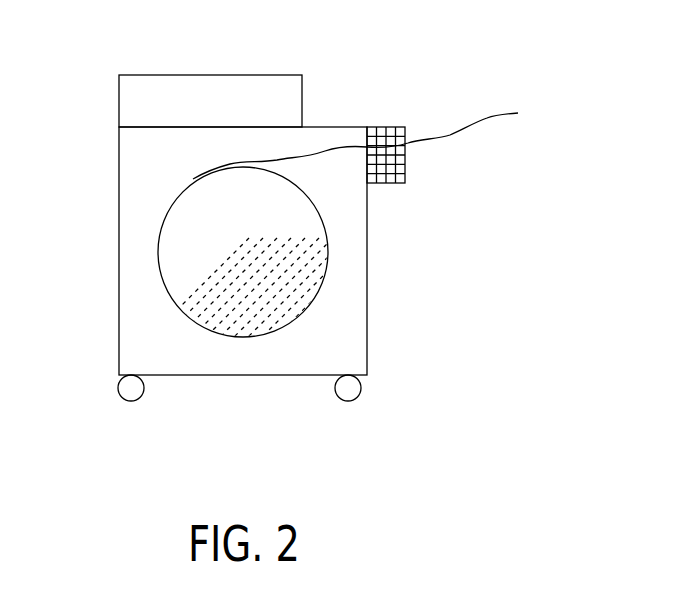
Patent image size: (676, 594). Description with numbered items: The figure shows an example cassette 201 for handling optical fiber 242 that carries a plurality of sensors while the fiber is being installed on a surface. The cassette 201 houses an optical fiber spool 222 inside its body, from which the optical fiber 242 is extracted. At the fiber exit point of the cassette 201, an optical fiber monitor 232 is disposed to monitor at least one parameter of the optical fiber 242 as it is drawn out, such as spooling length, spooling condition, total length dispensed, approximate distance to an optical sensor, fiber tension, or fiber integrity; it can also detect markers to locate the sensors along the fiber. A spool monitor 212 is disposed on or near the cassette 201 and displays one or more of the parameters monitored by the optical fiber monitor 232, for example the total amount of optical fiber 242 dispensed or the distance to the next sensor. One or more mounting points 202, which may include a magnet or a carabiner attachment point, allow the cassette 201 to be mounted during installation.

The cassette 201 is at (119, 165).
The mounting points 202 is at (141, 397).
The spool monitor 212 is at (207, 90).
The optical fiber spool 222 is at (158, 250).
The optical fiber monitor 232 is at (385, 133).
The optical fiber 242 is at (488, 113).